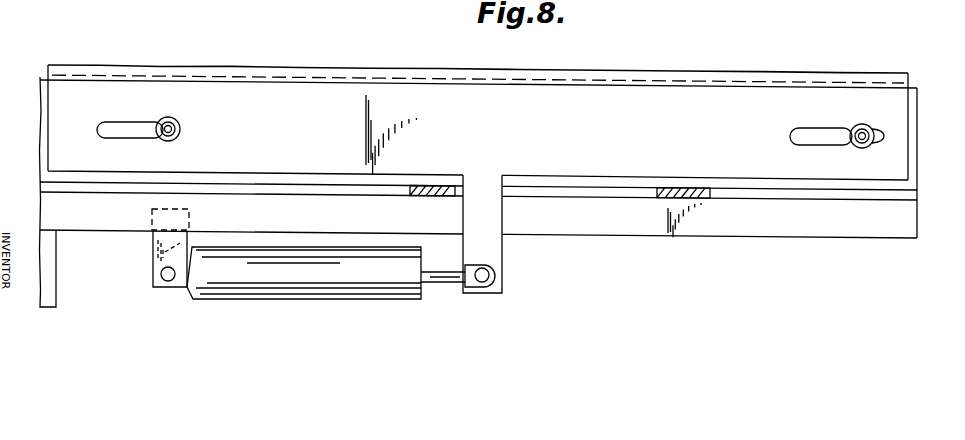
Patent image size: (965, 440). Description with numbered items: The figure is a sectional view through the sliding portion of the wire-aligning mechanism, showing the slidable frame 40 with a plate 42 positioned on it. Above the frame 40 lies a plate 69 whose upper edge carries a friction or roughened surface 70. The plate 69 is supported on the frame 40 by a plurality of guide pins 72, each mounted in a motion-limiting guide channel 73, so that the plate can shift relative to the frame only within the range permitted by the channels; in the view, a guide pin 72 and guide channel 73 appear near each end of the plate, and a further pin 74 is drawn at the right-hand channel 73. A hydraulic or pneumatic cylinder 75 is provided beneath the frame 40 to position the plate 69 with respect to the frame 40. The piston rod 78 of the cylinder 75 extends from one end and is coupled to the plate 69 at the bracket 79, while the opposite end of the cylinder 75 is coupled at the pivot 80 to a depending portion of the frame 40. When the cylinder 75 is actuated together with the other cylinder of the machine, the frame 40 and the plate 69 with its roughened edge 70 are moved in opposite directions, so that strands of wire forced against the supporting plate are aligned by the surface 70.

The slidable frame 40 is at (612, 220).
The plate 42 is at (913, 137).
The plate 69 is at (235, 100).
The friction or roughened surface 70 is at (88, 65).
The guide pins 72 is at (171, 139).
The motion-limiting guide channels 73 is at (130, 137).
The clamping nut 74 is at (864, 128).
The hydraulic or pneumatic cylinder 75 is at (320, 275).
The piston rod 78 is at (447, 283).
The coupling of piston rod to plate 79 is at (168, 281).
The coupling of cylinder to frame 80 is at (482, 280).